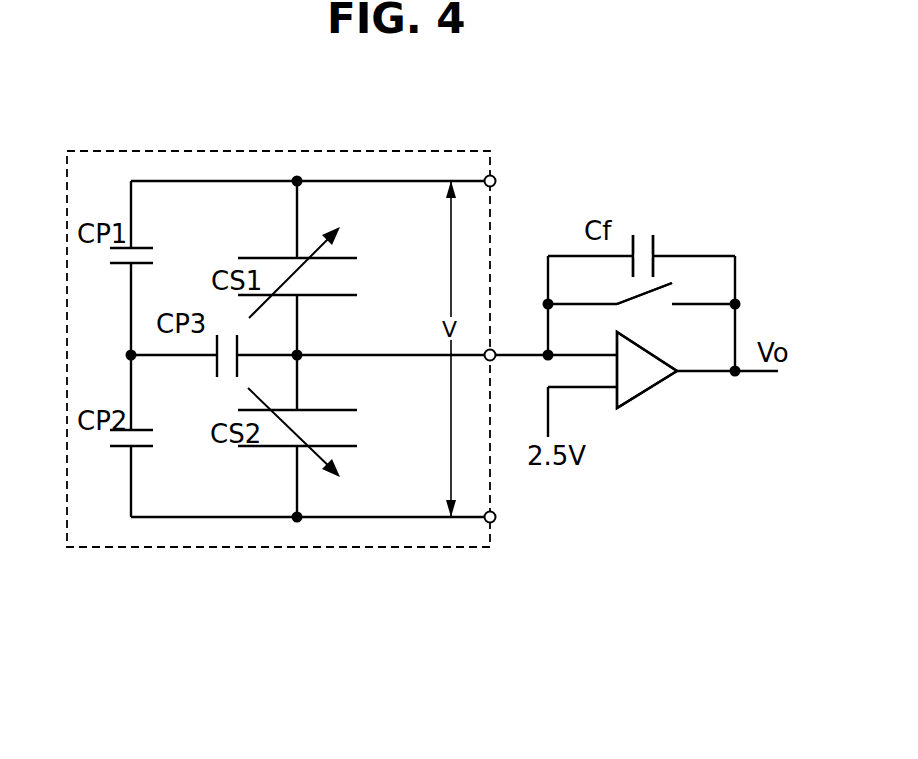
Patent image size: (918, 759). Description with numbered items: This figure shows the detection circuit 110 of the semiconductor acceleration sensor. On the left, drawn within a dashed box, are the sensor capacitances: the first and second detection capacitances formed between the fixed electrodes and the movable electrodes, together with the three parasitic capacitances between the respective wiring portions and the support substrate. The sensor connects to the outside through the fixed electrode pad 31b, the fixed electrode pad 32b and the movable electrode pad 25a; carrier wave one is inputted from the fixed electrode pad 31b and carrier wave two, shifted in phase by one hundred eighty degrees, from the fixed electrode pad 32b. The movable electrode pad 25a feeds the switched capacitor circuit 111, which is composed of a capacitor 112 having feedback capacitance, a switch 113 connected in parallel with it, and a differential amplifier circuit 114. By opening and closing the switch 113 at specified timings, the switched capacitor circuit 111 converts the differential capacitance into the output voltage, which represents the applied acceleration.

The detection circuit 110 is at (670, 95).
The switched capacitor circuit 111 is at (752, 287).
The capacitor 112 is at (643, 235).
The switch 113 is at (674, 282).
The differential amplifier circuit 114 is at (653, 387).
The movable electrode pad 25a is at (493, 350).
The fixed electrode pad 31b is at (493, 176).
The fixed electrode pad 32b is at (493, 522).